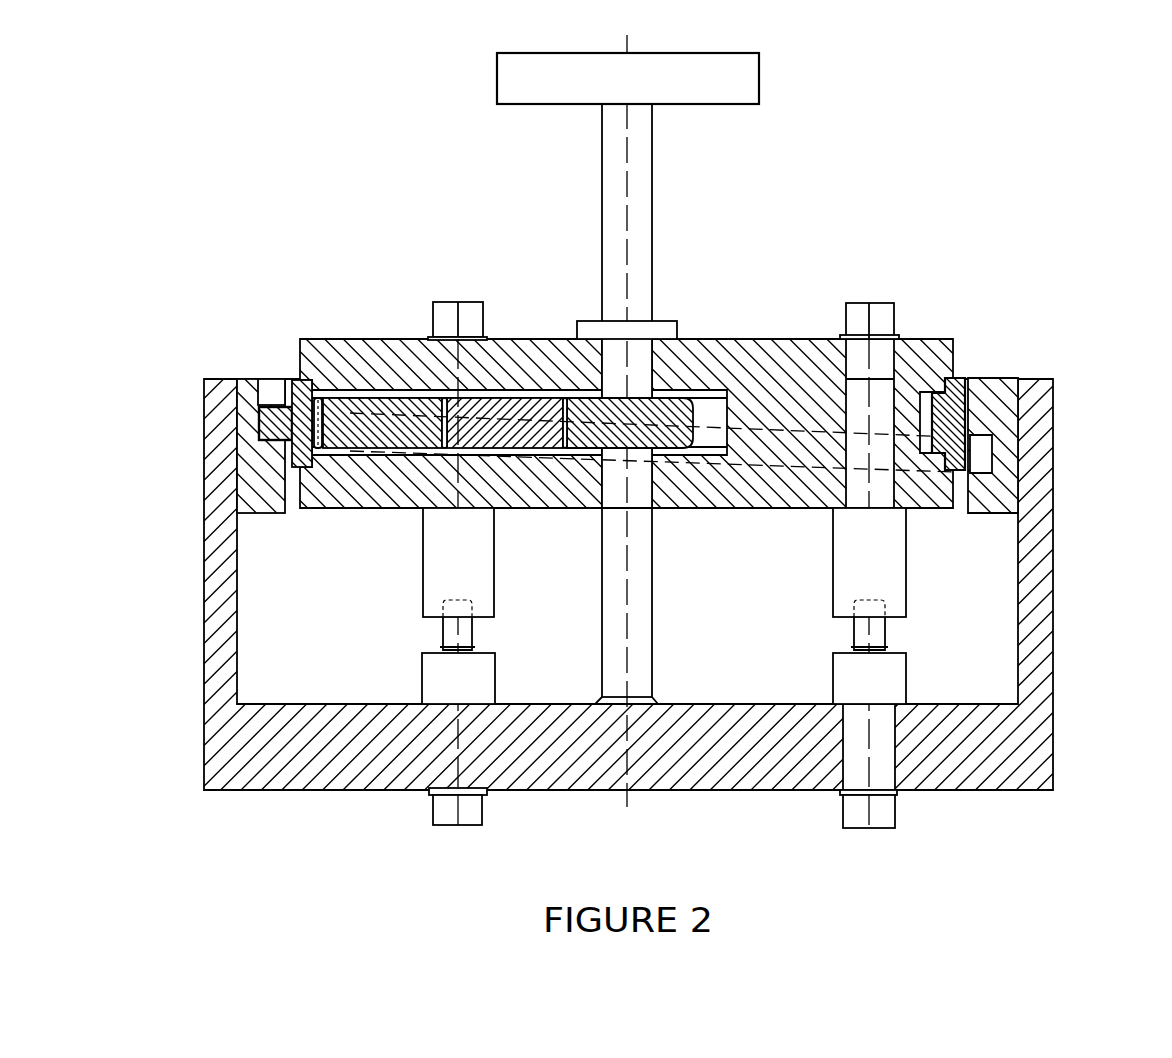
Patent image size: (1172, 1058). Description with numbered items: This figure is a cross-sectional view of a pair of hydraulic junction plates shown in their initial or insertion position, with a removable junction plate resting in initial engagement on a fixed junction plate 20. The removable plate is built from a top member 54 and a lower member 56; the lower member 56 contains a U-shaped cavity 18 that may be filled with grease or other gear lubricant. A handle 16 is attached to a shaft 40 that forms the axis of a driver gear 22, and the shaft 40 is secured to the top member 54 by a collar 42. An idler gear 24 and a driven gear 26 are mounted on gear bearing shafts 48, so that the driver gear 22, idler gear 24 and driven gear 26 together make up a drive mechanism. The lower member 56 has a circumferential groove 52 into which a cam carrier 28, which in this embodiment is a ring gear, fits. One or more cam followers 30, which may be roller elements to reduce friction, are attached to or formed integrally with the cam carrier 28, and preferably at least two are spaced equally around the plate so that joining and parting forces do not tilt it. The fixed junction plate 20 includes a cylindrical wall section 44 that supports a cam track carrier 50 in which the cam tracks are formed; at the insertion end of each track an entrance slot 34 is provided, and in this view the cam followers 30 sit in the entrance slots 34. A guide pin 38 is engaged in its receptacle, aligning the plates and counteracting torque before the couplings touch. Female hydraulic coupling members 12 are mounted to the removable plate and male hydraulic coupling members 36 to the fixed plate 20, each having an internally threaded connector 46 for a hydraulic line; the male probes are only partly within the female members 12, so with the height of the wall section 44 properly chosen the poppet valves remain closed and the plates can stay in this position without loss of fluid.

The female hydraulic coupling members 12 is at (493, 575).
The handle 16 is at (760, 72).
The U-shaped cavity 18 is at (705, 443).
The fixed junction plate 20 is at (672, 618).
The driver gear 22 is at (593, 440).
The idler gear 24 is at (517, 440).
The driven gear 26 is at (362, 440).
The cam carrier 28 is at (948, 417).
The cam followers 30 is at (273, 425).
The entrance slot 34 is at (270, 388).
The male hydraulic coupling members 36 is at (420, 683).
The guide pin 38 is at (653, 622).
The shaft 40 is at (653, 228).
The collar 42 is at (672, 330).
The cylindrical wall section 44 is at (1038, 492).
The connector 46 is at (475, 318).
The gear bearing shafts 48 is at (370, 392).
The cam track carrier 50 is at (995, 380).
The circumferential groove 52 is at (943, 378).
The top member 54 is at (765, 339).
The lower member 56 is at (745, 508).